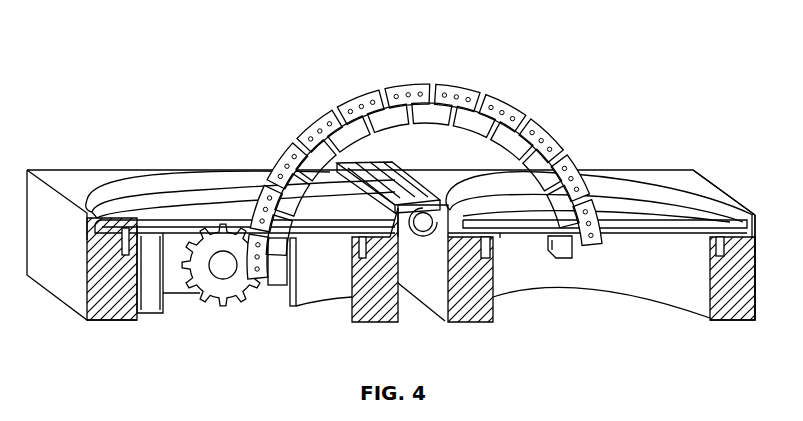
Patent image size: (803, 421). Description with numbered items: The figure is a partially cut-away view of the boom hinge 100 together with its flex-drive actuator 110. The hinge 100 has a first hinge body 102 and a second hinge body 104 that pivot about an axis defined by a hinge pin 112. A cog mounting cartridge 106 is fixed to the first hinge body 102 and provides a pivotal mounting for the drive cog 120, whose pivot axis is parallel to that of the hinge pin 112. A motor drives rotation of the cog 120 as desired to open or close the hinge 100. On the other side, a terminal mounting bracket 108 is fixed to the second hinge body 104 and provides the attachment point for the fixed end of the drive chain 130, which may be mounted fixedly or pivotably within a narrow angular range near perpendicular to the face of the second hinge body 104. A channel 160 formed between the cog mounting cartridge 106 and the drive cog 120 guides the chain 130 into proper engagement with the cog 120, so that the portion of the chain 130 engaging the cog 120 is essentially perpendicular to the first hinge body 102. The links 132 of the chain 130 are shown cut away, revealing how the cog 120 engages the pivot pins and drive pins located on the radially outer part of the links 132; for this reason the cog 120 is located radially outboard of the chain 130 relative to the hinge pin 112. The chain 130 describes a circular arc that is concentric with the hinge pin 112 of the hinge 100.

The boom hinge 100 is at (426, 326).
The first hinge body 102 is at (75, 170).
The second hinge body 104 is at (726, 322).
The cog mounting cartridge 106 is at (293, 306).
The terminal mounting bracket 108 is at (620, 258).
The flex-drive actuator 110 is at (245, 136).
The hinge pin 112 is at (424, 232).
The drive cog 120 is at (215, 298).
The drive chain 130 is at (438, 152).
The links 132 is at (456, 80).
The channel 160 is at (269, 308).